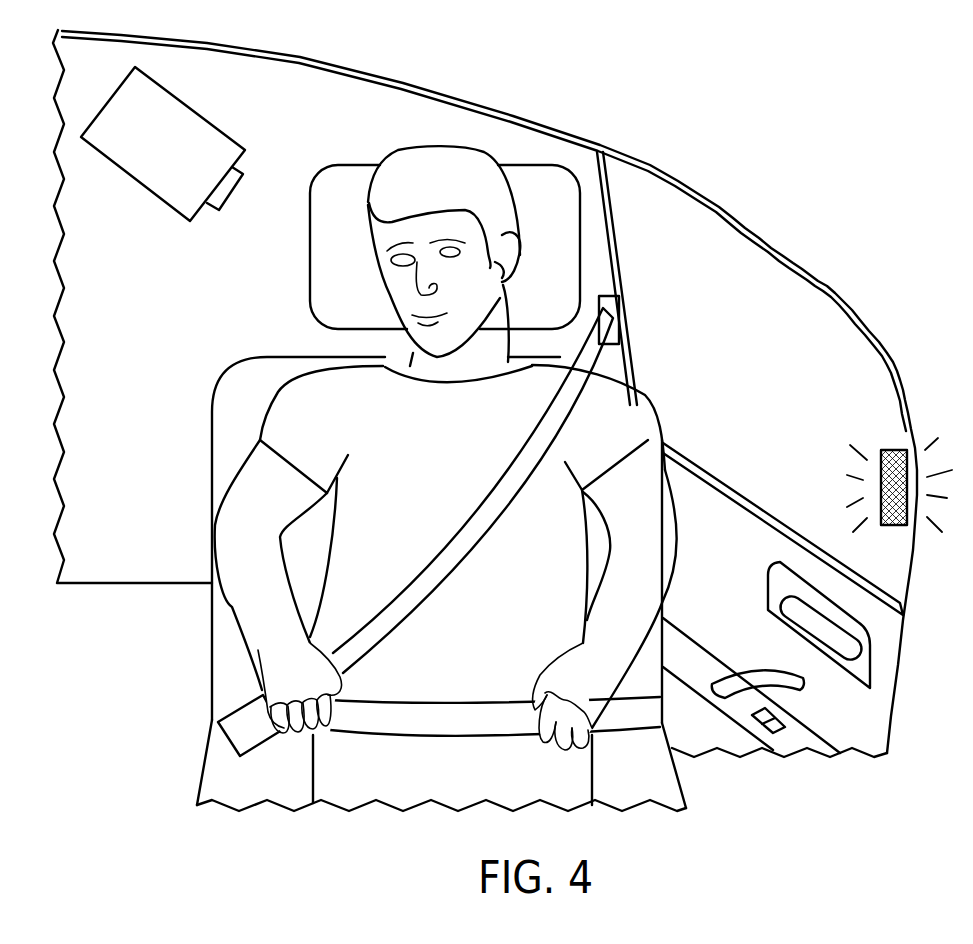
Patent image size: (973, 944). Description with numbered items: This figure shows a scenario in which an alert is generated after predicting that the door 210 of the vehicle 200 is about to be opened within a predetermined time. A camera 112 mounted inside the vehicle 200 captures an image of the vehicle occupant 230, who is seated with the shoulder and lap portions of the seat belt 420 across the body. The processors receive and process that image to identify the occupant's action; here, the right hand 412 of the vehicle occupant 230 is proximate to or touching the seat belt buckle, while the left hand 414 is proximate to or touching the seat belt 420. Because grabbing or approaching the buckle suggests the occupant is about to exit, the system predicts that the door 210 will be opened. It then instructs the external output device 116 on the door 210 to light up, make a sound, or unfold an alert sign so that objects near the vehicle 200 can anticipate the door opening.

The camera 112 is at (204, 117).
The external output device 116 is at (893, 450).
The vehicle 200 is at (795, 180).
The door 210 is at (725, 462).
The vehicle occupant 230 is at (413, 401).
The right hand 412 is at (280, 678).
The left hand 414 is at (572, 663).
The seat belt 420 is at (392, 738).